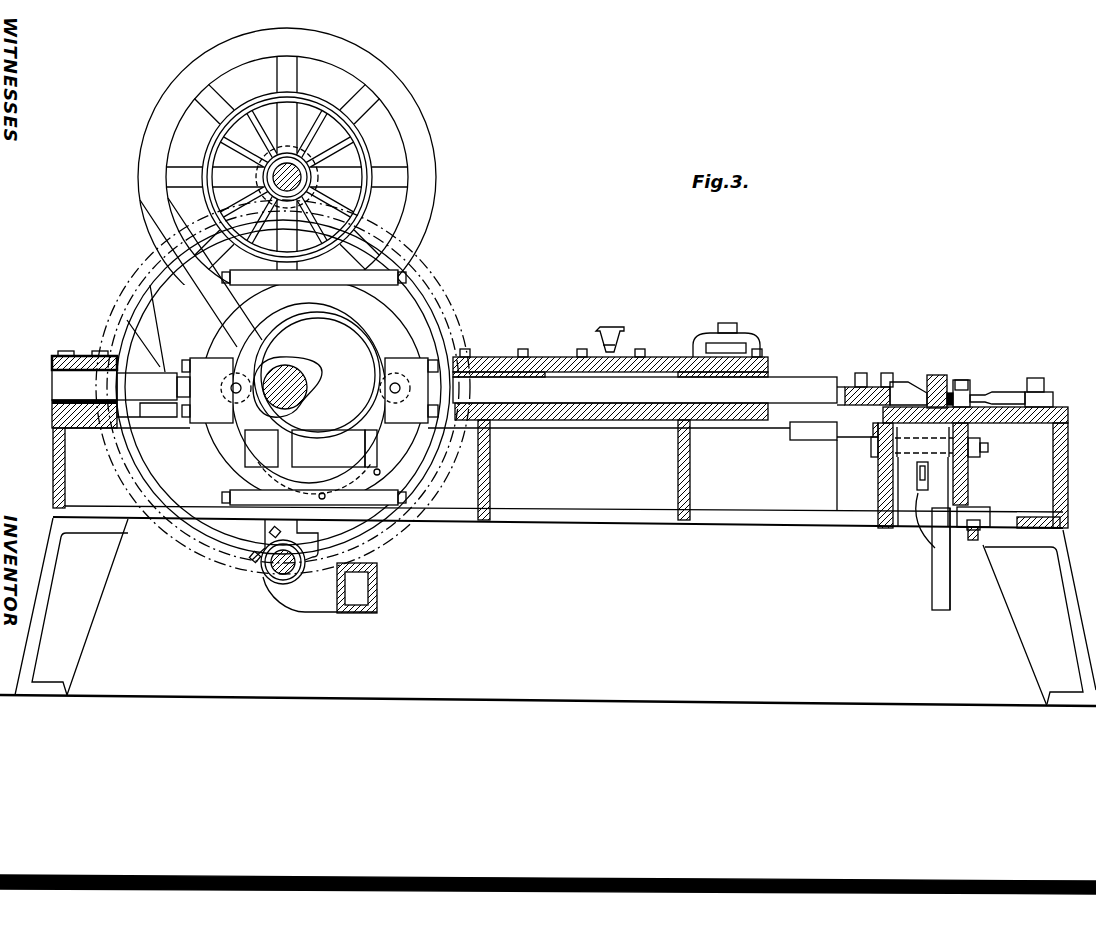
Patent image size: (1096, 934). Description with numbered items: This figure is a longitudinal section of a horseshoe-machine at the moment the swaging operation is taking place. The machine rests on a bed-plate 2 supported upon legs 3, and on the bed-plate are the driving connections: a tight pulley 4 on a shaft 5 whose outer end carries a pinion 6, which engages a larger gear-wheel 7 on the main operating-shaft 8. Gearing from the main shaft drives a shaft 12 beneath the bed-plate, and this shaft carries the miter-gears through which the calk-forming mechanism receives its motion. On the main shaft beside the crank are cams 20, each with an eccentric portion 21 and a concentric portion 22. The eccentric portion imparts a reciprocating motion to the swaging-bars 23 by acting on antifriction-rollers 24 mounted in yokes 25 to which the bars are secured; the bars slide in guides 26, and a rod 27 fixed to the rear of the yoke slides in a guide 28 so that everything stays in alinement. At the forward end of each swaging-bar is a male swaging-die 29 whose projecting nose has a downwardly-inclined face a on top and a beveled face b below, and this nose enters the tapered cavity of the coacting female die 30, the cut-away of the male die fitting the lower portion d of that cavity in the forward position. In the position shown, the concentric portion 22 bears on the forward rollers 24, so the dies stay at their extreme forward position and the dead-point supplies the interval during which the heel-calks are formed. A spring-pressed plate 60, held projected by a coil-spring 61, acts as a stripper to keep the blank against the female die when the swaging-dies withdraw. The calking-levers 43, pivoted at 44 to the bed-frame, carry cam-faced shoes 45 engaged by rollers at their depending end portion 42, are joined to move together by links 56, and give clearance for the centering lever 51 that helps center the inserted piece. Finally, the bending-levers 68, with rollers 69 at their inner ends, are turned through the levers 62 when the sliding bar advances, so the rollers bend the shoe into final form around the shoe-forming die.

The bed-plate 2 is at (56, 450).
The legs 3 is at (555, 612).
The tight pulley 4 is at (290, 98).
The shaft 5 is at (272, 174).
The pinion 6 is at (292, 150).
The gear-wheel 7 is at (158, 290).
The main operating-shaft 8 is at (306, 392).
The shaft 12 is at (278, 572).
The cam 20 is at (318, 375).
The eccentric portion 21 is at (272, 318).
The concentric portion 22 is at (372, 343).
The swaging-bar 23 is at (645, 398).
The antifriction-roller 24 is at (311, 448).
The yoke 25 is at (430, 337).
The guide 26 is at (482, 356).
The rod 27 is at (121, 399).
The guide 28 is at (64, 356).
The swaging-die 29 is at (896, 382).
The female swaging-die 30 is at (936, 375).
The depending end portion 42 is at (934, 588).
The calking-lever 43 is at (916, 497).
The pivot 44 is at (988, 446).
The cam-faced shoe 45 is at (950, 585).
The centering lever 51 is at (927, 478).
The link 56 is at (970, 541).
The spring-pressed plate 60 is at (848, 390).
The coil-spring 61 is at (884, 390).
The lever 62 is at (708, 346).
The bending-lever 68 is at (1008, 396).
The roller 69 is at (966, 396).
The downwardly-inclined portion a is at (950, 391).
The beveled portion b is at (924, 477).
The lower portion of cavity d is at (975, 426).